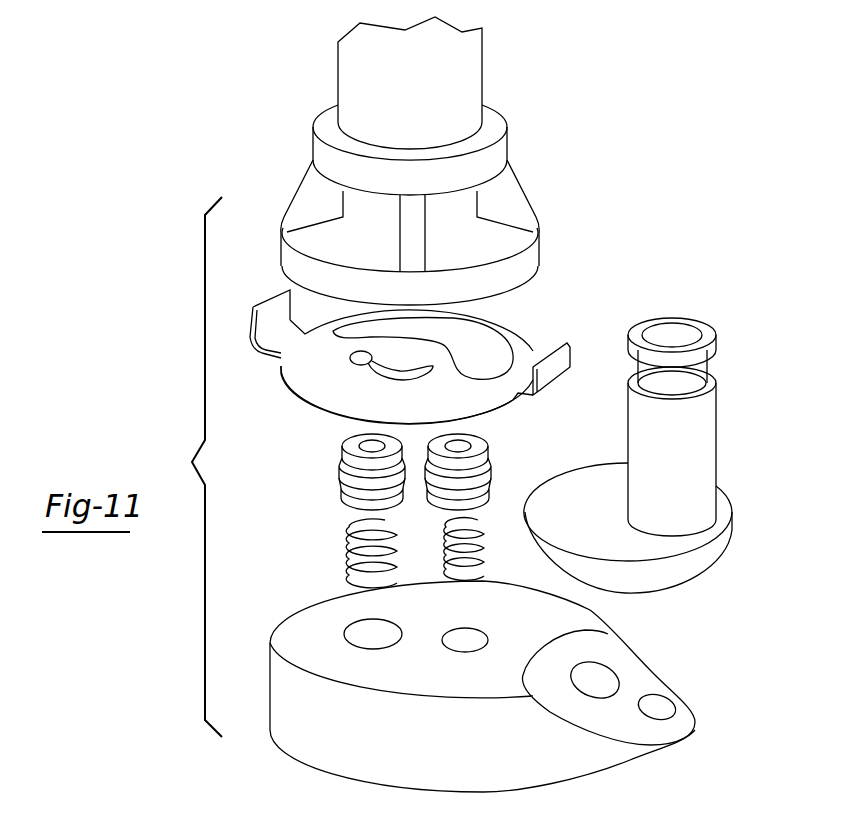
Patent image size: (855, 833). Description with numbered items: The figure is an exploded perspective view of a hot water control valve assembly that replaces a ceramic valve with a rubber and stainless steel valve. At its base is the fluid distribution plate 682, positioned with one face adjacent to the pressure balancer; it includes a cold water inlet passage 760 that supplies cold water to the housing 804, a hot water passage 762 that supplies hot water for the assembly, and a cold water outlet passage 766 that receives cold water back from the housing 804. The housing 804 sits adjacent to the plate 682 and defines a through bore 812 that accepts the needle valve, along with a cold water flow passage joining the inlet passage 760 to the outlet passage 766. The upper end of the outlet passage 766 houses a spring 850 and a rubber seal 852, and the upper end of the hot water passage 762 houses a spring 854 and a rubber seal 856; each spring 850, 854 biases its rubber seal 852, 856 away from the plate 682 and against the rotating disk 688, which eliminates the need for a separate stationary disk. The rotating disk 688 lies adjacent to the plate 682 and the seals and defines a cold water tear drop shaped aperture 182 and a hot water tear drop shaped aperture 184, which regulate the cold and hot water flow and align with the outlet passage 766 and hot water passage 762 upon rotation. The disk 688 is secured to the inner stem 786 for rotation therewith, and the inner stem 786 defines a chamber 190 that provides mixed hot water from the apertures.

The inner stem 786 is at (522, 78).
The chamber 190 is at (394, 229).
The cold water tear drop shaped aperture 182 is at (348, 397).
The hot water tear drop shaped aperture 184 is at (496, 343).
The rotating disk 688 is at (352, 366).
The through bore 812 is at (687, 324).
The housing 804 is at (692, 437).
The rubber seal 856 is at (342, 477).
The rubber seal 852 is at (480, 482).
The spring 854 is at (350, 535).
The spring 850 is at (483, 546).
The fluid distribution plate 682 is at (468, 760).
The hot water passage 762 is at (391, 635).
The cold water outlet passage 766 is at (472, 632).
The cold water inlet passage 760 is at (653, 703).